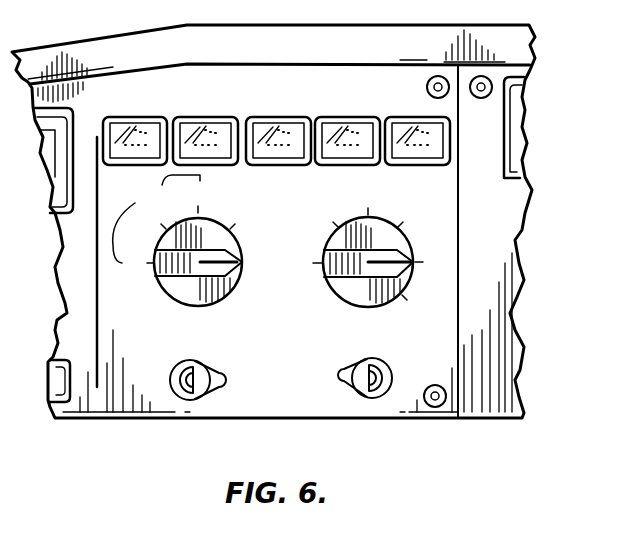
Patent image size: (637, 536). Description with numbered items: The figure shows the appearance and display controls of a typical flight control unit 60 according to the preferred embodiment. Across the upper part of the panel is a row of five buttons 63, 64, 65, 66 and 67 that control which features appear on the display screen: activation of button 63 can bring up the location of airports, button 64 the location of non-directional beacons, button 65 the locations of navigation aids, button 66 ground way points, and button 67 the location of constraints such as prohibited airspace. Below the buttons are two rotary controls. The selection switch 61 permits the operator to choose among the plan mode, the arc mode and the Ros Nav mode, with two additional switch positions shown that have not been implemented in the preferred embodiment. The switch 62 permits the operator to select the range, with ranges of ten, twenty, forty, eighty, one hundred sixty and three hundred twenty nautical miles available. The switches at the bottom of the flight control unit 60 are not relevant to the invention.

The flight control unit 60 is at (313, 407).
The selection switch 61 is at (232, 293).
The switch 62 is at (327, 290).
The button 63 is at (143, 115).
The button 64 is at (213, 117).
The button 65 is at (283, 117).
The button 66 is at (354, 117).
The button 67 is at (414, 117).